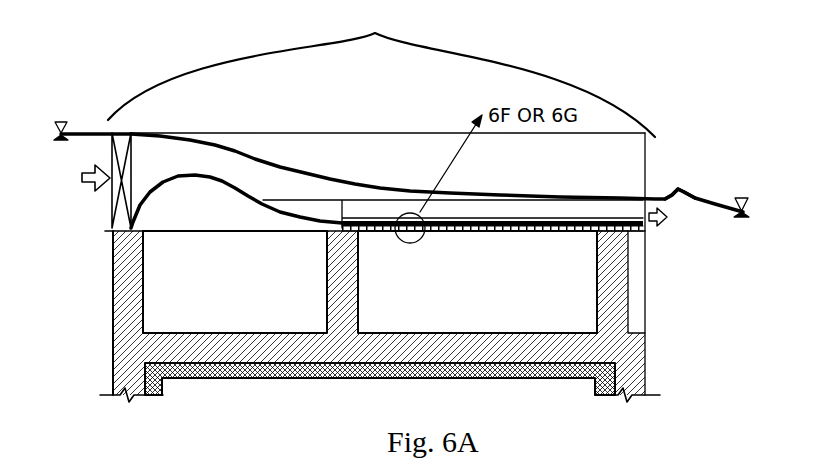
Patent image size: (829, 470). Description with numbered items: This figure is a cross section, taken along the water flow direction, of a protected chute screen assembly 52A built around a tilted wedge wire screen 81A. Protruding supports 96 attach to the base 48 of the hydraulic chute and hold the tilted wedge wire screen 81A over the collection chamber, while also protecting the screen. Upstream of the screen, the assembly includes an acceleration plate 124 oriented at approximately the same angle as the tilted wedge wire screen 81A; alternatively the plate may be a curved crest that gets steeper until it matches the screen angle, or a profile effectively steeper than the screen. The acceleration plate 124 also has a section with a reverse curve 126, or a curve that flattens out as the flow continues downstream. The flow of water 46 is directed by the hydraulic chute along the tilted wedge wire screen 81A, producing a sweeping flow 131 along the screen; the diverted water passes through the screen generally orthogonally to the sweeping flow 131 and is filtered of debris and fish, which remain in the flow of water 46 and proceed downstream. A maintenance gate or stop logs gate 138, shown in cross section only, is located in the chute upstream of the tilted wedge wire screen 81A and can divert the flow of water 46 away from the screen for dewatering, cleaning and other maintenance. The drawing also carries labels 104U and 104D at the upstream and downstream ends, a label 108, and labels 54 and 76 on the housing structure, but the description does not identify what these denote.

The protected chute screen assembly 52A is at (381, 70).
The upstream support 104U is at (63, 122).
The downstream support 104D is at (740, 197).
The acceleration plate 124 is at (220, 173).
The reverse curve 126 is at (280, 208).
The protruding supports 96 is at (573, 200).
The tilted wedge wire screen 81A is at (617, 218).
The bump 108 is at (675, 195).
The sweeping flow 131 is at (655, 224).
The flow of water 46 is at (80, 180).
The maintenance gate or stop logs gate 138 is at (112, 203).
The housing 54 is at (32, 282).
The wall 76 is at (628, 300).
The base 48 is at (348, 312).